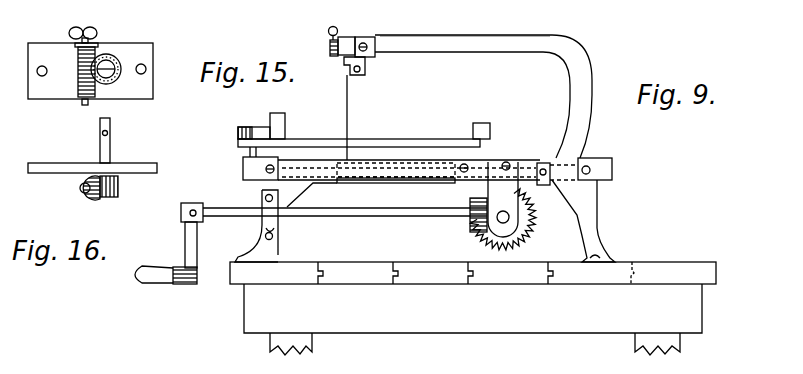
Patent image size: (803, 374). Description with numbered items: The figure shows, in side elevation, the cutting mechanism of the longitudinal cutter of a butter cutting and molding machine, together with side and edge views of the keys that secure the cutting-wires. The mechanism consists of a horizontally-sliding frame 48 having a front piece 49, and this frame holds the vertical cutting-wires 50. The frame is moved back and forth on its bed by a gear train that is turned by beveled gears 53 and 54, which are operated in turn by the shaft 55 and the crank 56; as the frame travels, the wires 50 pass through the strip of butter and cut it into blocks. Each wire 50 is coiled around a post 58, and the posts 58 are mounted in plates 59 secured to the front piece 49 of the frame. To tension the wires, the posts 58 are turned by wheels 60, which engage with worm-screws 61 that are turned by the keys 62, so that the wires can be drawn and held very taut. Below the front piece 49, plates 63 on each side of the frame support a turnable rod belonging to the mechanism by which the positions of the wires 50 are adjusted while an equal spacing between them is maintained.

In FIG. 9, the horizontally-sliding frame 48 is at (582, 93).
In FIG. 9, the front piece of the frame 49 is at (459, 52).
In FIG. 16, the vertical cutting-wires 50 is at (100, 133).
In FIG. 9, the vertical cutting-wires 50 is at (349, 110).
In FIG. 9, the beveled gear 53 is at (537, 226).
In FIG. 9, the beveled gear 54 is at (470, 222).
In FIG. 9, the shaft 55 is at (353, 223).
In FIG. 9, the crank 56 is at (186, 246).
In FIG. 16, the posts 58 is at (111, 141).
In FIG. 15, the plates 59 is at (150, 92).
In FIG. 16, the plates 59 is at (140, 165).
In FIG. 16, the wheels 60 is at (120, 188).
In FIG. 15, the worm-screws 61 is at (78, 62).
In FIG. 9, the worm-screws 61 is at (330, 47).
In FIG. 15, the keys 62 is at (99, 34).
In FIG. 16, the keys 62 is at (89, 200).
In FIG. 9, the keys 62 is at (346, 28).
In FIG. 9, the plates 63 is at (368, 60).